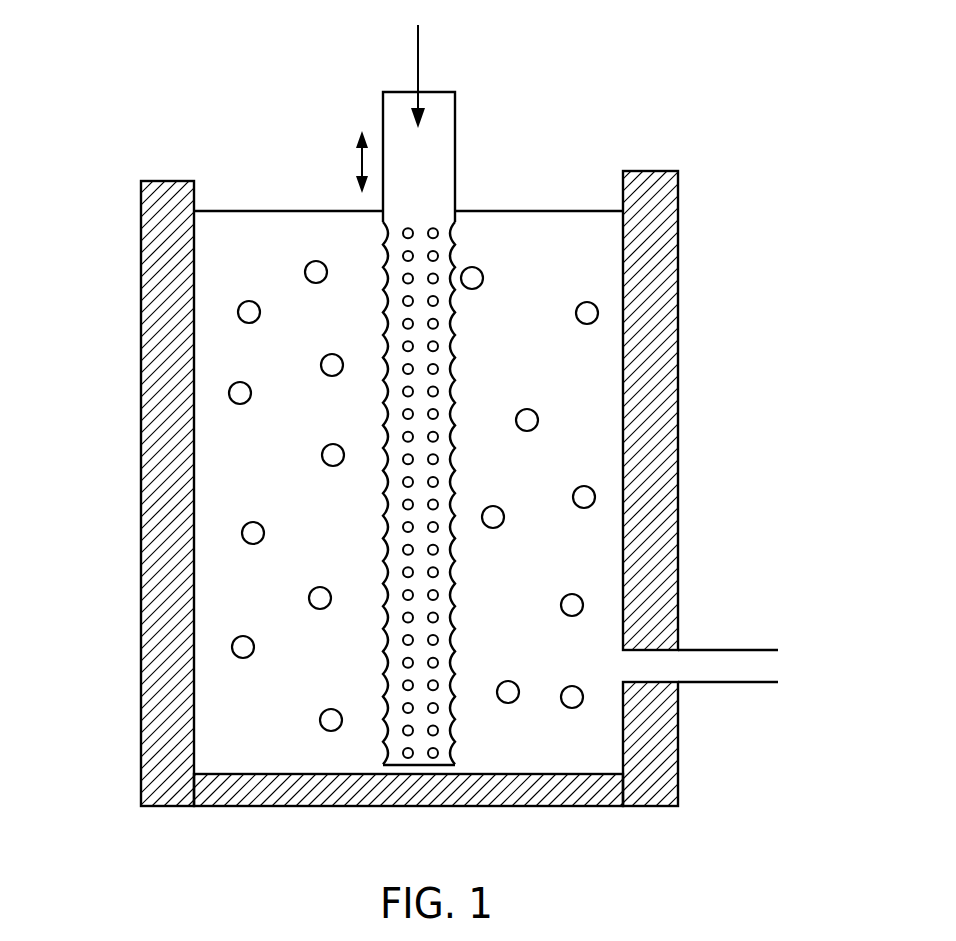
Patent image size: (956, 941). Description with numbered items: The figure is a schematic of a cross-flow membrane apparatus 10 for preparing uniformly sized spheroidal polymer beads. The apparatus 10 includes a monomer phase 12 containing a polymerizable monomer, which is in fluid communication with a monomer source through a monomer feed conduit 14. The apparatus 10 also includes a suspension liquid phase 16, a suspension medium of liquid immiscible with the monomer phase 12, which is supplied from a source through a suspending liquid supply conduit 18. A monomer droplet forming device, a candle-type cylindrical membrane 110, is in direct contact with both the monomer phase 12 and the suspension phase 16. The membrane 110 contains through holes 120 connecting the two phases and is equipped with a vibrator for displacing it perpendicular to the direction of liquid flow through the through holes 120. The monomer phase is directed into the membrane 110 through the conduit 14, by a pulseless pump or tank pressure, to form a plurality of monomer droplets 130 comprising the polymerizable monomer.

The apparatus 10 is at (141, 318).
The monomer phase 12 is at (442, 268).
The monomer feed conduit 14 is at (445, 162).
The suspension liquid phase 16 is at (587, 547).
The suspending liquid supply conduit 18 is at (763, 668).
The membrane 110 is at (383, 497).
The through holes 120 is at (387, 708).
The monomer droplets 130 is at (493, 529).